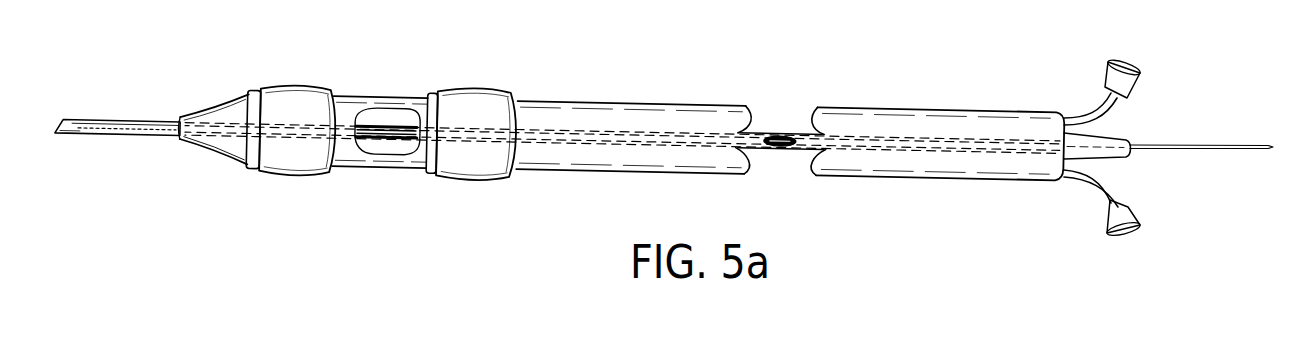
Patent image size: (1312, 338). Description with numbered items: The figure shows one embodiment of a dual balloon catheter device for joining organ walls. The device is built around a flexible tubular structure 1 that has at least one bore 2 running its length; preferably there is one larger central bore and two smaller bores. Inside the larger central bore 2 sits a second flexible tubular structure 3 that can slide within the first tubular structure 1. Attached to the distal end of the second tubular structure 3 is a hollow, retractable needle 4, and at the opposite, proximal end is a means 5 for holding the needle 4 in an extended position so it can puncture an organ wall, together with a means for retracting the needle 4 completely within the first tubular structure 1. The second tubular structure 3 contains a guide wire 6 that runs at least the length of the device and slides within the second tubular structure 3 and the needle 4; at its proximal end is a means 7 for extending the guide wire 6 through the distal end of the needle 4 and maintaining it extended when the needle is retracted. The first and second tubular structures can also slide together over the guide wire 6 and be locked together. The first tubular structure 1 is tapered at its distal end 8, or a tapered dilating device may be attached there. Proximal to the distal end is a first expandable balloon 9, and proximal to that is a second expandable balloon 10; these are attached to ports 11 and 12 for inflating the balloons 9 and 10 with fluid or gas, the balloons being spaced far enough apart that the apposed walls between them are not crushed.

The flexible tubular structure 1 is at (547, 98).
The bore 2 is at (367, 117).
The second flexible tubular structure 3 is at (380, 127).
The hollow, retractable needle 4 is at (90, 122).
The means for holding the needle 5 is at (1128, 138).
The guide wire 6 is at (98, 138).
The means for extending the guide wire 7 is at (1193, 144).
The tapered distal end 8 is at (200, 110).
The first expandable balloon 9 is at (294, 179).
The second expandable balloon 10 is at (470, 182).
The port 11 is at (1107, 75).
The port 12 is at (1133, 203).